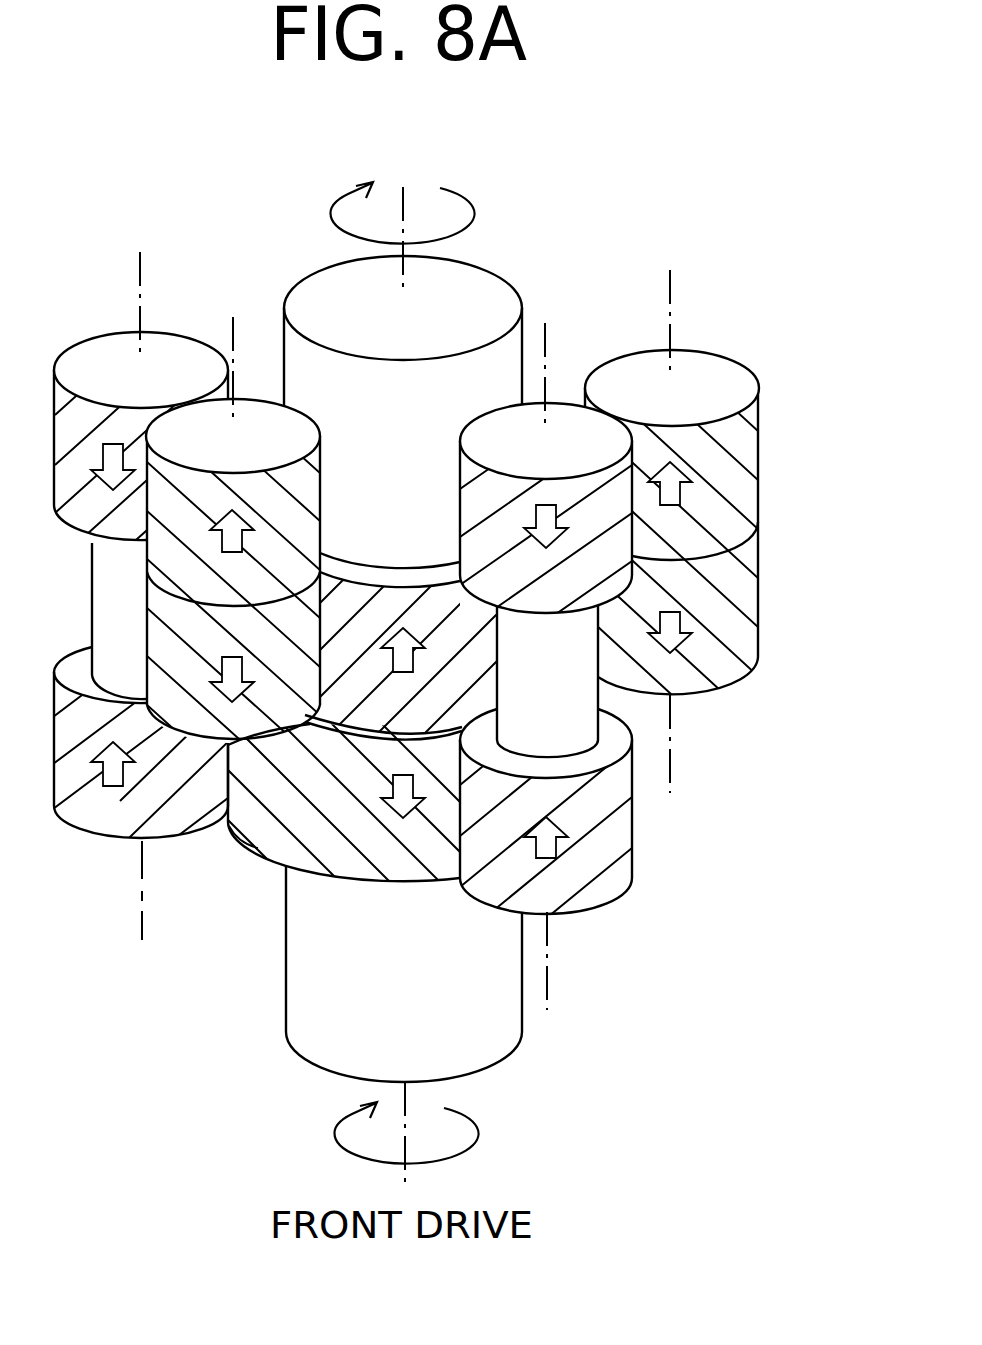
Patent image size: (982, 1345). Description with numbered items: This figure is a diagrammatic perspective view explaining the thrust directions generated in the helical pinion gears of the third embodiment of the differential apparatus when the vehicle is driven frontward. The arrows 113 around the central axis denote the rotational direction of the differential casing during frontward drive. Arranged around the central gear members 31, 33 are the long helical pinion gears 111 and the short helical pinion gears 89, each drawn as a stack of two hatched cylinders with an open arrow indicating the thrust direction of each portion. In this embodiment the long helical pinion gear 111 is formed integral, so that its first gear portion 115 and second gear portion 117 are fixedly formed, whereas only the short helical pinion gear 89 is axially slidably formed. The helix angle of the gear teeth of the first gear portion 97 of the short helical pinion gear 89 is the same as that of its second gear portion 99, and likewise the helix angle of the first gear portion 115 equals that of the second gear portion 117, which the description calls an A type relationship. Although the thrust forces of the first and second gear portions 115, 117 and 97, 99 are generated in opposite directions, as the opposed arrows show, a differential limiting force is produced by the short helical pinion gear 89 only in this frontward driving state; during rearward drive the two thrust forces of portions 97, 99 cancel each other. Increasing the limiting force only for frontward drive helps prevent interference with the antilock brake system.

The upper magnet ring 31 is at (393, 599).
The lower magnet ring 33 is at (399, 869).
The short helical pinion gear 89 is at (488, 517).
The first gear portion 97 is at (303, 462).
The second gear portion 99 is at (307, 699).
The long helical pinion gear 111 is at (338, 620).
The rotational direction of the differential casing 113 is at (332, 215).
The first gear portion 115 is at (549, 612).
The second gear portion 117 is at (543, 798).